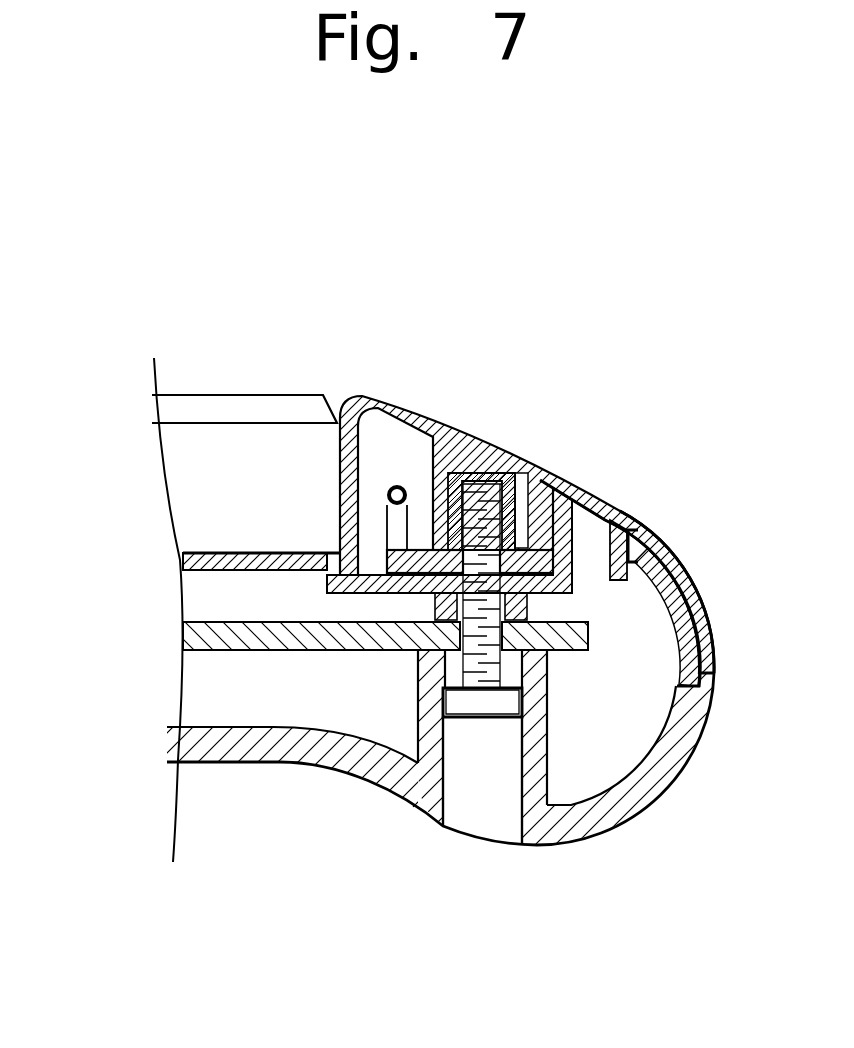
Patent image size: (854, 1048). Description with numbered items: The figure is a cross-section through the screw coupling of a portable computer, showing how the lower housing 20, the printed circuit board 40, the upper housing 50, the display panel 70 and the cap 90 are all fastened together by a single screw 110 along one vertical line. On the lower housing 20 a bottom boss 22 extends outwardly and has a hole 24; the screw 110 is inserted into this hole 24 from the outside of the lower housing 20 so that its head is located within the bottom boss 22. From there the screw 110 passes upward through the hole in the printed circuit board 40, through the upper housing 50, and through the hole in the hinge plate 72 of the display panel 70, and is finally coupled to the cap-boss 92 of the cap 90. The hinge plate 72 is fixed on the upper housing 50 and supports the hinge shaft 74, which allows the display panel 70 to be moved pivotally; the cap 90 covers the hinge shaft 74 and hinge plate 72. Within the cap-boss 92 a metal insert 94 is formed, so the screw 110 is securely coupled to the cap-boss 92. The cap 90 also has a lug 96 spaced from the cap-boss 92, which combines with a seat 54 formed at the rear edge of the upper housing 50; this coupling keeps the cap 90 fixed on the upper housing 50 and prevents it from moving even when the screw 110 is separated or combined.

The lower housing 20 is at (277, 748).
The bottom bosses 22 is at (423, 747).
The hole 24 is at (476, 820).
The printed circuit board 40 is at (185, 636).
The upper housing 50 is at (180, 560).
The seat 54 is at (630, 512).
The display panel 70 is at (224, 440).
The hinge plates 72 is at (573, 483).
The hinge shaft 74 is at (395, 484).
The caps 90 is at (421, 427).
The cap-boss 92 is at (530, 543).
The insert 94 is at (483, 475).
The lug 96 is at (660, 528).
The screw 110 is at (488, 710).